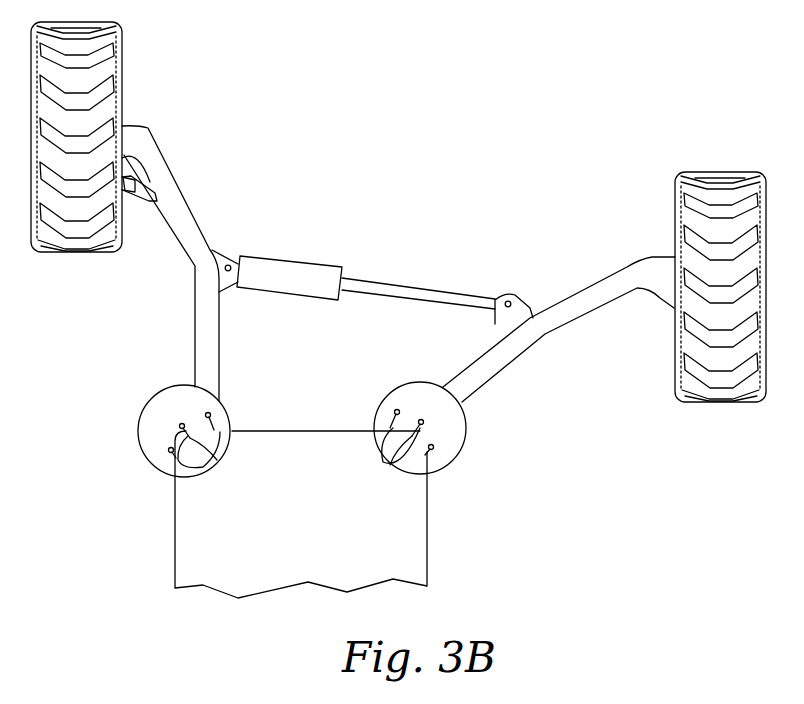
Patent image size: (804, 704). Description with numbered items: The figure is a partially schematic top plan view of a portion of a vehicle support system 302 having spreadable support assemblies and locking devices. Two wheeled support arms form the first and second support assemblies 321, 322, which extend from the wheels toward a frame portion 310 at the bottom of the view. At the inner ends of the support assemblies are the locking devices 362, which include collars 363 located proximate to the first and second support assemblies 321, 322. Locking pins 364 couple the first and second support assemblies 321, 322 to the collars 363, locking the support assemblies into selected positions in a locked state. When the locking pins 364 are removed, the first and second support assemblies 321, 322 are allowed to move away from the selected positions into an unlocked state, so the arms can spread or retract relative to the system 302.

The vehicle support system 302 is at (572, 101).
The frame / chassis 310 is at (422, 566).
The first support assembly 321 is at (195, 342).
The second support assembly 322 is at (494, 368).
The locking device 362 is at (385, 393).
The collar 363 is at (138, 443).
The locking pin 364 is at (217, 467).